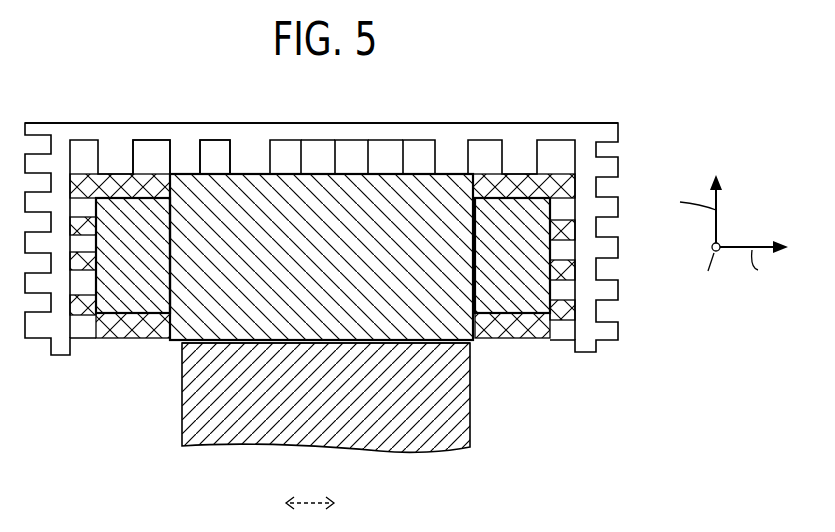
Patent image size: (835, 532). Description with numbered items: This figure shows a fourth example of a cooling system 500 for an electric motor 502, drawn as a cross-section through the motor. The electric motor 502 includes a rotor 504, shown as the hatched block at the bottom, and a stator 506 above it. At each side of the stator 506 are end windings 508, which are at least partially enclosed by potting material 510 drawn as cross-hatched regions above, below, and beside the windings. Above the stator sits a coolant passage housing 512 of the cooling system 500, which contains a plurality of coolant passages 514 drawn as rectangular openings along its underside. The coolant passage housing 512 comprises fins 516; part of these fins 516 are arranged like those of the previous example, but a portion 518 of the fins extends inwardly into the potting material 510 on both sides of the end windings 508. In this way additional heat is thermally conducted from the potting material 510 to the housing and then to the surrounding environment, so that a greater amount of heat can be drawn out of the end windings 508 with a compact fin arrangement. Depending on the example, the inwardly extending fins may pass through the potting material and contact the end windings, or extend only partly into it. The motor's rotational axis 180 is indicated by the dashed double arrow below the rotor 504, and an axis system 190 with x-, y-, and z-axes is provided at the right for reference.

The cooling system 500 is at (657, 132).
The electric motor 502 is at (714, 91).
The rotor 504 is at (334, 413).
The stator 506 is at (284, 163).
The end windings 508 is at (148, 271).
The potting material 510 is at (150, 330).
The coolant passage housing 512 is at (243, 104).
The coolant passages 514 is at (215, 160).
The fins 516 is at (388, 167).
The portion of the fins 518 is at (80, 325).
The rotational axis 180 is at (310, 500).
The axis system 190 is at (756, 192).